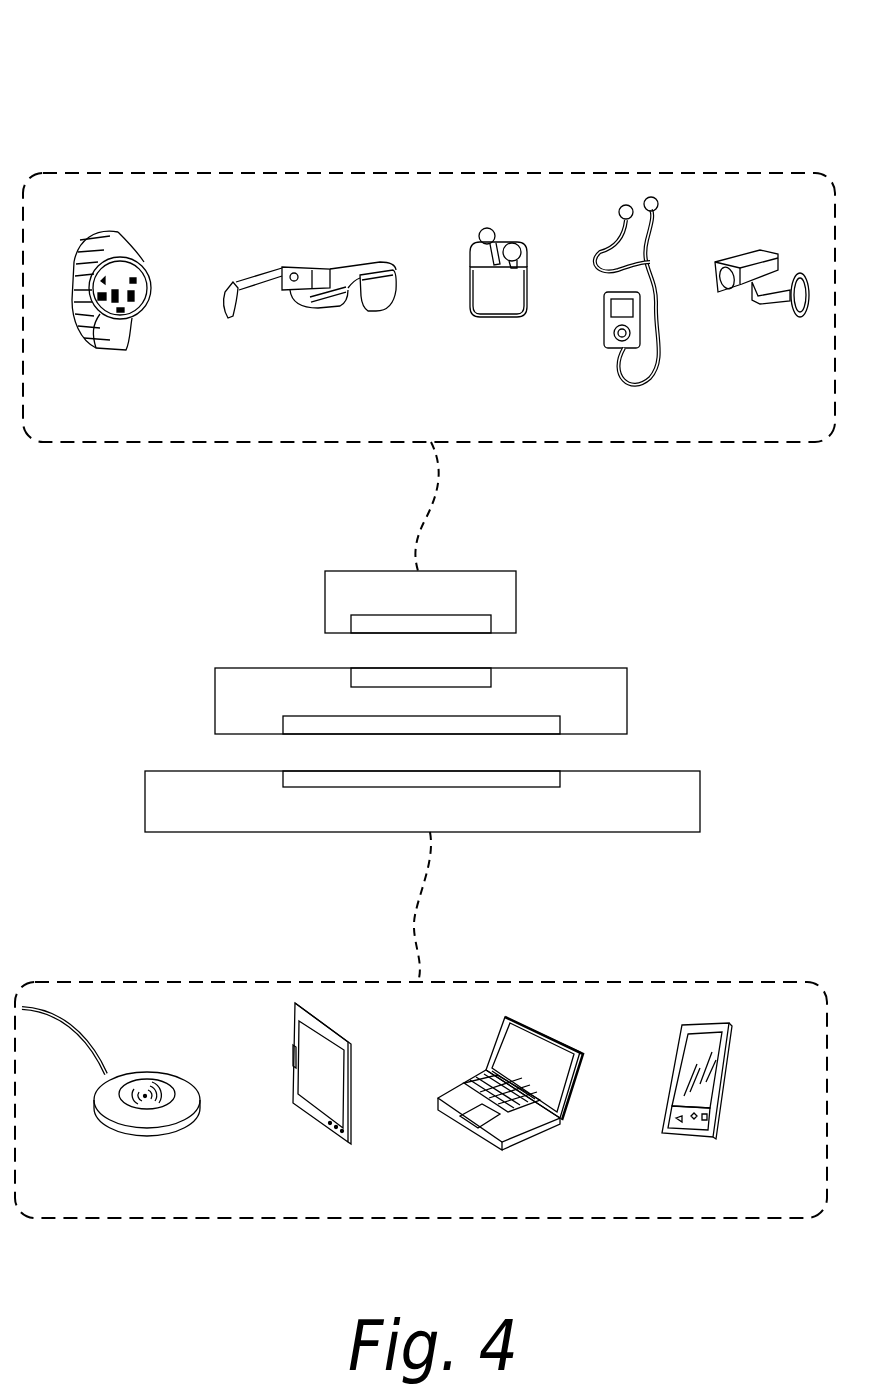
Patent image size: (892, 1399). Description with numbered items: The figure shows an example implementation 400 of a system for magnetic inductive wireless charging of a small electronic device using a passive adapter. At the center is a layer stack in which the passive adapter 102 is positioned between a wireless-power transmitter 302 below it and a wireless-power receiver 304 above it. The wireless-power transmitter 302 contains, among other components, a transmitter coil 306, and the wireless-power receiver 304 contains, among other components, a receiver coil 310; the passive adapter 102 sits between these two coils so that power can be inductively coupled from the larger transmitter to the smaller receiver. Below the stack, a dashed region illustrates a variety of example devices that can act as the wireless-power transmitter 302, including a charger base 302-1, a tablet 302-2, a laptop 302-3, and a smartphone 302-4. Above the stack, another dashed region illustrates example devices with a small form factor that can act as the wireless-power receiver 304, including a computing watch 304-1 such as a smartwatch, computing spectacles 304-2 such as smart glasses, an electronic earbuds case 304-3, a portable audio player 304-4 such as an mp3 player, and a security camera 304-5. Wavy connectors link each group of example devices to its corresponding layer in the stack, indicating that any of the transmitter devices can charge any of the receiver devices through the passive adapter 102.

The example implementation 400 is at (108, 52).
The wireless-power receiver 304 is at (325, 604).
The computing watch 304-1 is at (132, 397).
The computing spectacles 304-2 is at (340, 366).
The electronic earbuds case 304-3 is at (530, 364).
The portable audio player 304-4 is at (666, 416).
The security camera 304-5 is at (797, 349).
The receiver coil 310 is at (422, 615).
The passive adapter 102 is at (215, 702).
The wireless-power transmitter 302 is at (145, 800).
The transmitter coil 306 is at (283, 787).
The charger base 302-1 is at (182, 1177).
The tablet 302-2 is at (357, 1182).
The laptop 302-3 is at (530, 1194).
The smartphone 302-4 is at (722, 1184).